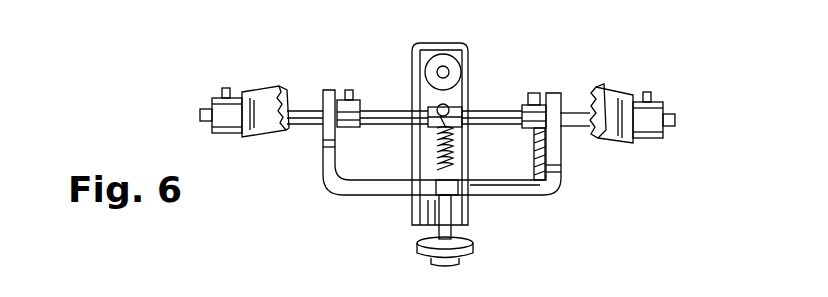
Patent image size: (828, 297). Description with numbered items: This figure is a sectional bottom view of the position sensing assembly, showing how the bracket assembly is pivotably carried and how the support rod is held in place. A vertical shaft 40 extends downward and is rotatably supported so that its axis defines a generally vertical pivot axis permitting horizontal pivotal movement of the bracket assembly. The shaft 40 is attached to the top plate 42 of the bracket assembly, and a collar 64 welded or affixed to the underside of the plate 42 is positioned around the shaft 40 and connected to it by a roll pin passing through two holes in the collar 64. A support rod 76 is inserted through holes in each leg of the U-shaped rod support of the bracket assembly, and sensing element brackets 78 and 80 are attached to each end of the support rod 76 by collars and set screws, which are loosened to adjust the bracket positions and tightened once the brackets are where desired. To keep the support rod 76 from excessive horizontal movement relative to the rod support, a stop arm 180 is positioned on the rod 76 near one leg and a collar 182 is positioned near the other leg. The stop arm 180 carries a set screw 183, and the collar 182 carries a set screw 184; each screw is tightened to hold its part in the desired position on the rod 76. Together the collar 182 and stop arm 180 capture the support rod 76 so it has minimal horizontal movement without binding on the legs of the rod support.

The vertical shaft 40 is at (448, 67).
The top plate 42 is at (462, 96).
The collar 64 is at (438, 68).
The support rod 76 is at (303, 112).
The sensing element bracket 78 is at (263, 103).
The sensing element bracket 80 is at (608, 100).
The stop arm 180 is at (563, 162).
The collar 182 is at (356, 110).
The set screw 183 is at (535, 92).
The set screw 184 is at (350, 90).